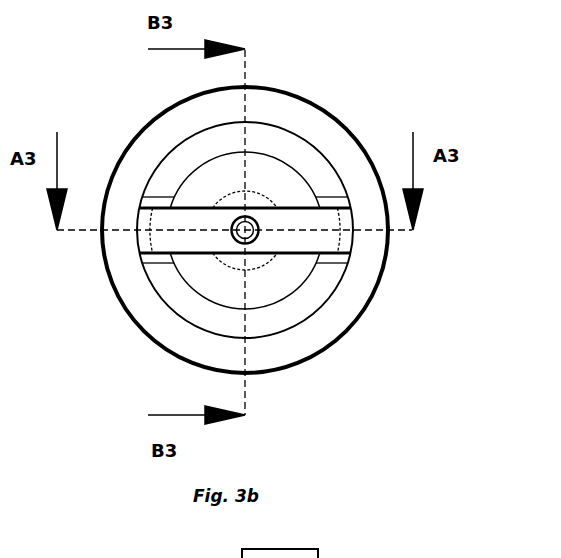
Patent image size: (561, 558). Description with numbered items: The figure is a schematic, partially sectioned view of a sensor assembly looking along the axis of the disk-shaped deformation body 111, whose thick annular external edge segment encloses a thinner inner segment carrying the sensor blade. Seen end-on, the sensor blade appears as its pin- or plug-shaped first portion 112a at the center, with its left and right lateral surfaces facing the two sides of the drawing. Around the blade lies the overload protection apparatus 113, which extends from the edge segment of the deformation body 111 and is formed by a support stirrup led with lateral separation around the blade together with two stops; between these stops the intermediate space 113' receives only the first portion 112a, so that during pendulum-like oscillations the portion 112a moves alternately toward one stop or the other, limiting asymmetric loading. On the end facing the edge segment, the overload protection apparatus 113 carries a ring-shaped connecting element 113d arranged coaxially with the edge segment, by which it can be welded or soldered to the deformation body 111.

The deformation body 111 is at (237, 290).
The first portion of the sensor blade 112a is at (238, 224).
The overload protection apparatus 113 is at (245, 230).
The intermediate space 113' is at (158, 253).
The connecting element 113d is at (215, 322).